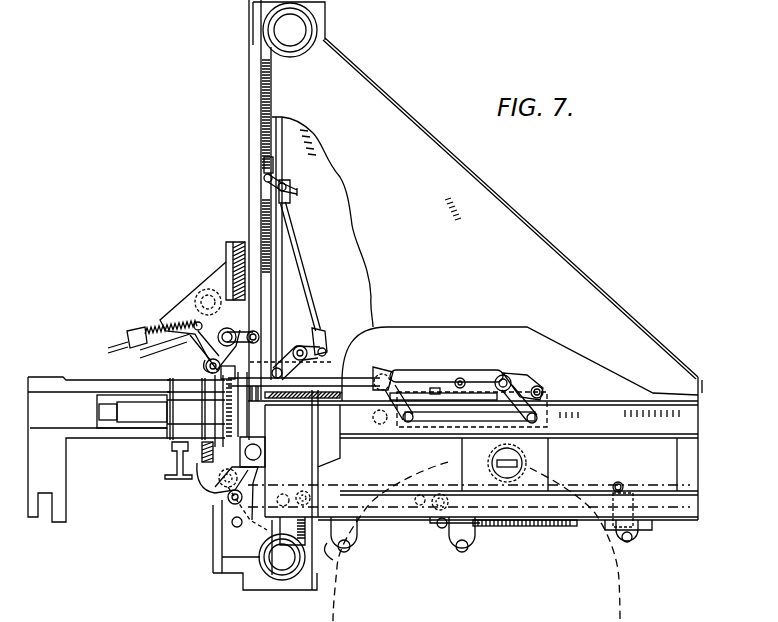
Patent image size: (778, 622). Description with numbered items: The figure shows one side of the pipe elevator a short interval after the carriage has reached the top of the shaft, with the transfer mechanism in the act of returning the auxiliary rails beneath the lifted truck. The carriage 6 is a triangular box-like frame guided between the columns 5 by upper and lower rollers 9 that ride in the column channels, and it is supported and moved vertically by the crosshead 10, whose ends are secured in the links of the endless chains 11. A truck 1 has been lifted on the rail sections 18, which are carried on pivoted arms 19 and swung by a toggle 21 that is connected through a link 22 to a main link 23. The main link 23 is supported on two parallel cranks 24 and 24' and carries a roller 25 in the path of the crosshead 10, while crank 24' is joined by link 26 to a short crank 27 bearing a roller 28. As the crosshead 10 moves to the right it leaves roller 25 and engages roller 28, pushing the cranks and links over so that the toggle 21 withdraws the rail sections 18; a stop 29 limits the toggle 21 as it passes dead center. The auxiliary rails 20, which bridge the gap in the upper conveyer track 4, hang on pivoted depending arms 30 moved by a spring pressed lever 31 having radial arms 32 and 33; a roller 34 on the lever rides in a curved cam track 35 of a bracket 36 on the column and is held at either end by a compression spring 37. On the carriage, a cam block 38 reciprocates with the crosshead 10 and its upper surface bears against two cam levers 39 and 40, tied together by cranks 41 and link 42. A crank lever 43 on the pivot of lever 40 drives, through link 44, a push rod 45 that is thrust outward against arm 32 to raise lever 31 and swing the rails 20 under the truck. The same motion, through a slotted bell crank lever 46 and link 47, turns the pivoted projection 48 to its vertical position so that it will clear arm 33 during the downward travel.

The truck 1 is at (78, 380).
The conveyer track 4 is at (190, 463).
The column 5 is at (250, 82).
The carriage 6 is at (700, 420).
The roller 9 is at (263, 30).
The crosshead 10 is at (547, 468).
The endless chain 11 is at (621, 617).
The rail section 18 is at (197, 445).
The pivoted arm 19 is at (213, 485).
The auxiliary rail 20 is at (210, 471).
The toggle 21 is at (231, 502).
The link 22 is at (249, 490).
The main link 23 is at (360, 493).
The crank 24 is at (344, 548).
The crank 24' is at (448, 549).
The roller 25 is at (445, 499).
The link 26 is at (515, 524).
The short crank 27 is at (627, 501).
The roller 28 is at (619, 481).
The stop 29 is at (233, 527).
The depending arm 30 is at (238, 422).
The spring pressed lever 31 is at (190, 345).
The radial arm 32 is at (206, 365).
The radial arm 33 is at (247, 323).
The roller 34 is at (192, 312).
The cam track 35 is at (183, 343).
The bracket 36 is at (147, 328).
The compression spring 37 is at (163, 321).
The cam block 38 is at (436, 392).
The cam lever 39 is at (372, 382).
The cam lever 40 is at (527, 376).
The crank 41 is at (395, 412).
The link 42 is at (455, 423).
The crank lever 43 is at (478, 375).
The link 44 is at (402, 371).
The push rod 45 is at (227, 374).
The slotted bell crank lever 46 is at (288, 352).
The link 47 is at (303, 266).
The pivoted projection 48 is at (264, 162).